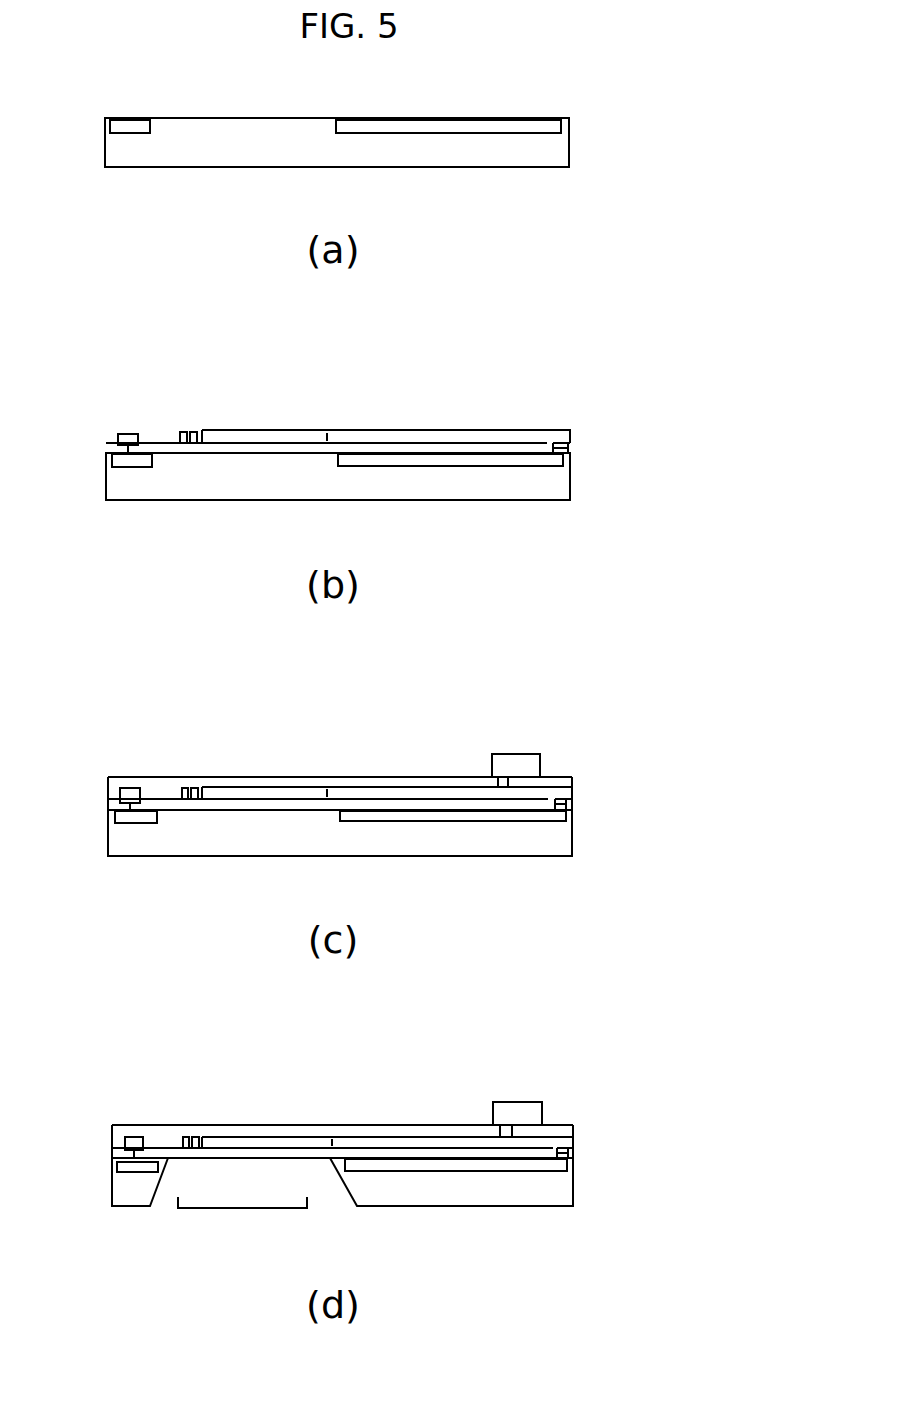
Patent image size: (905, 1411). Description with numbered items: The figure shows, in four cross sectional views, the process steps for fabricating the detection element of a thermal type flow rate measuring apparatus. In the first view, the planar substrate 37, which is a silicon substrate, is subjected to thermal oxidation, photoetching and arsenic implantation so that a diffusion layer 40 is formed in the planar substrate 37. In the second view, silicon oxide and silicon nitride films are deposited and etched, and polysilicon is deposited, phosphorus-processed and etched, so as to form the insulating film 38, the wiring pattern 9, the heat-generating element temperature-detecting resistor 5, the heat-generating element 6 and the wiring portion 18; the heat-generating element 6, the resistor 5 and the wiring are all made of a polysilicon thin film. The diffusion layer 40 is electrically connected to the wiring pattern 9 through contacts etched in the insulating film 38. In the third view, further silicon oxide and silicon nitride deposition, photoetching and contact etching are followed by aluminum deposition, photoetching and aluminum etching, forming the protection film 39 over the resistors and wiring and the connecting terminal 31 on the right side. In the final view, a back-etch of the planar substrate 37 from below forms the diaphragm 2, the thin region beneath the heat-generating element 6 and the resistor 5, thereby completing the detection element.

The diaphragm 2 is at (240, 1208).
The heat-generating element temperature-detecting resistor 5 is at (194, 432).
The heat-generating element 6 is at (272, 438).
The wiring pattern 9 is at (128, 434).
The wiring portion 18 is at (400, 438).
The connecting terminal 31 is at (512, 766).
The planar substrate 37 is at (107, 141).
The insulating film 38 is at (107, 451).
The protection film 39 is at (109, 785).
The diffusion layer 40 is at (128, 125).